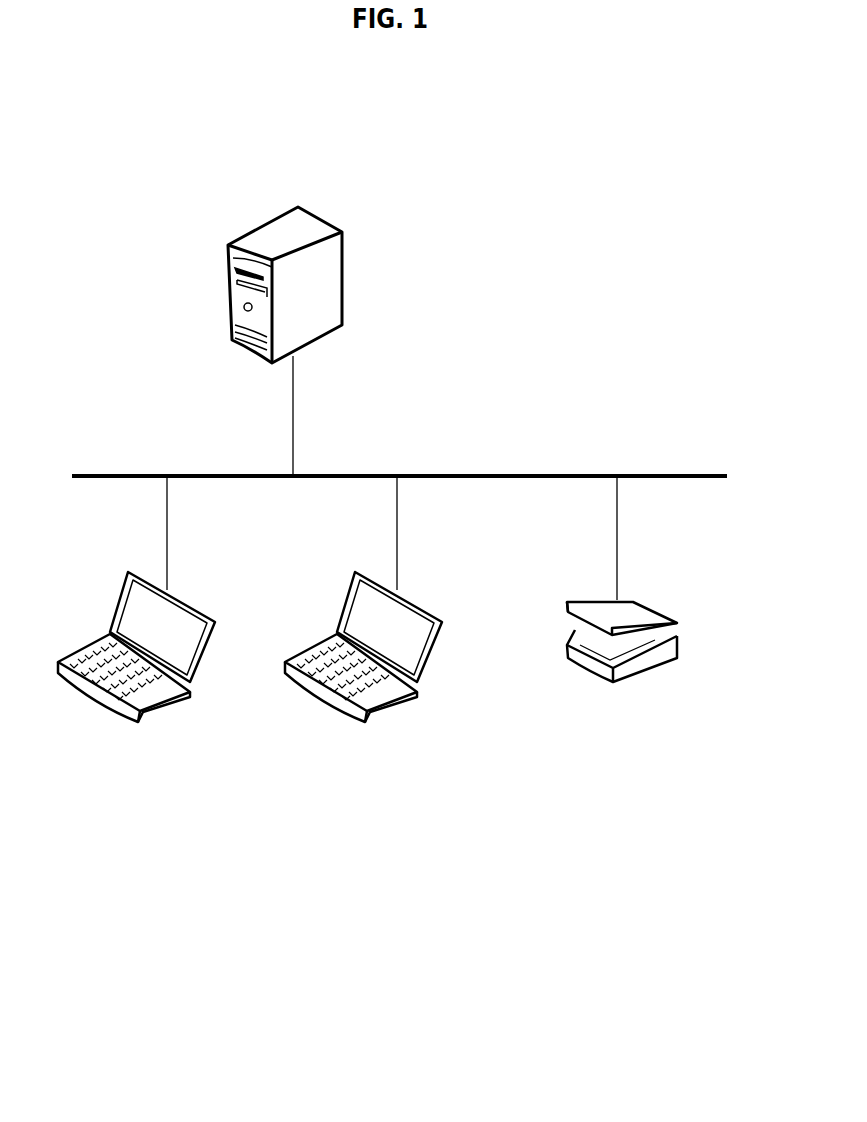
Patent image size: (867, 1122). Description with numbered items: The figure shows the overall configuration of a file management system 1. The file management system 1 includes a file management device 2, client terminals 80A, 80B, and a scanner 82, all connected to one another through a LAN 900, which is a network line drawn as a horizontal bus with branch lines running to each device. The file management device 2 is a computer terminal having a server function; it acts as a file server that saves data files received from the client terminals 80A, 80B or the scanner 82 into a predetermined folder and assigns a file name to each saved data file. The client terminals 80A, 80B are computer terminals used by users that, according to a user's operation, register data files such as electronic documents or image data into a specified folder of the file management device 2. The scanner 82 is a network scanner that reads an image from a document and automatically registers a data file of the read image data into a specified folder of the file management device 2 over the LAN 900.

The file management system 1 is at (597, 966).
The file management device 2 is at (283, 211).
The LAN 900 is at (672, 476).
The client terminal 80A is at (160, 710).
The client terminal 80B is at (383, 710).
The scanner 82 is at (620, 682).